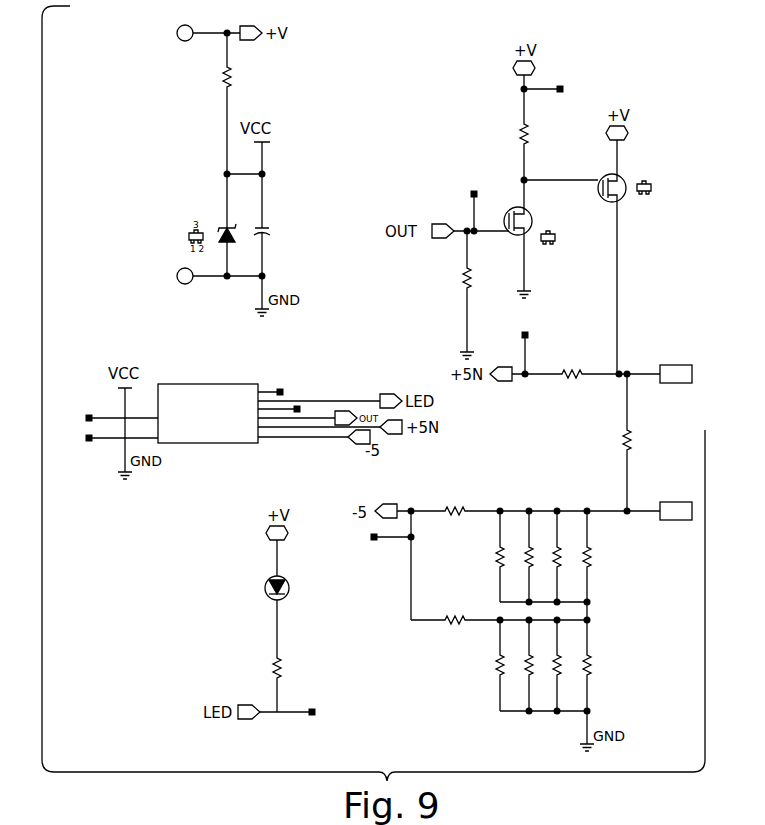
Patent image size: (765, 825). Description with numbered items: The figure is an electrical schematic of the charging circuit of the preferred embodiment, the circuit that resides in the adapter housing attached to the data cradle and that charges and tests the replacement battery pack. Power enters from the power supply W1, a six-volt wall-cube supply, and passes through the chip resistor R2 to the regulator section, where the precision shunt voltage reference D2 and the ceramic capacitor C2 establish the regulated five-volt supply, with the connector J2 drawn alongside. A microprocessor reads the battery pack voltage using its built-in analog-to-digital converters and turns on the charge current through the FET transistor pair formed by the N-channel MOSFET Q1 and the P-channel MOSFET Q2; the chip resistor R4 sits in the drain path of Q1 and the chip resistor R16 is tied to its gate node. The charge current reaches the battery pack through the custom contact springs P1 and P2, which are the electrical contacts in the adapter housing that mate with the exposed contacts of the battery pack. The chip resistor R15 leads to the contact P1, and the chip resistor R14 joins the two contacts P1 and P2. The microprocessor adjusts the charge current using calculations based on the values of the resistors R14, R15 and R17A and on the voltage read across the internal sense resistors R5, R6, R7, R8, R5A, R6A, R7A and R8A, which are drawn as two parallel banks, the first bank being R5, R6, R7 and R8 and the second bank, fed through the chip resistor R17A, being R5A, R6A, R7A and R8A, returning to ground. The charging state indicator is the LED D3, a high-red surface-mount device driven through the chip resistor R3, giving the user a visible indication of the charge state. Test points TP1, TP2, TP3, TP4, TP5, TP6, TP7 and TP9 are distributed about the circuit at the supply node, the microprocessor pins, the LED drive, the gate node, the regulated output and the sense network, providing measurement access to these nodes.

The power supply W1 is at (193, 34).
The chip resistor R2 is at (240, 103).
The precision shunt voltage reference D2 is at (235, 225).
The ceramic capacitor C2 is at (272, 225).
The connector J2 is at (204, 277).
The test point TP1 is at (575, 90).
The test point TP2 is at (104, 419).
The test point TP3 is at (328, 713).
The test point TP4 is at (104, 439).
The test point TP5 is at (471, 201).
The test point TP6 is at (407, 357).
The test point TP7 is at (374, 538).
The test point TP9 is at (313, 410).
The chip resistor R4 is at (537, 134).
The N-channel MOSFET transistor Q1 is at (529, 233).
The P-channel MOSFET transistor Q2 is at (617, 257).
The chip resistor R16 is at (450, 289).
The chip resistor R15 is at (569, 364).
The contact spring P1 is at (659, 363).
The chip resistor R14 is at (645, 442).
The contact spring P2 is at (659, 500).
The chip resistor R17A is at (499, 610).
The sense resistor R5 is at (496, 556).
The sense resistor R6 is at (525, 556).
The sense resistor R7 is at (553, 556).
The sense resistor R8 is at (583, 556).
The sense resistor R5A is at (497, 665).
The sense resistor R6A is at (526, 665).
The sense resistor R7A is at (554, 665).
The sense resistor R8A is at (584, 665).
The LED D3 is at (294, 597).
The chip resistor R3 is at (290, 683).